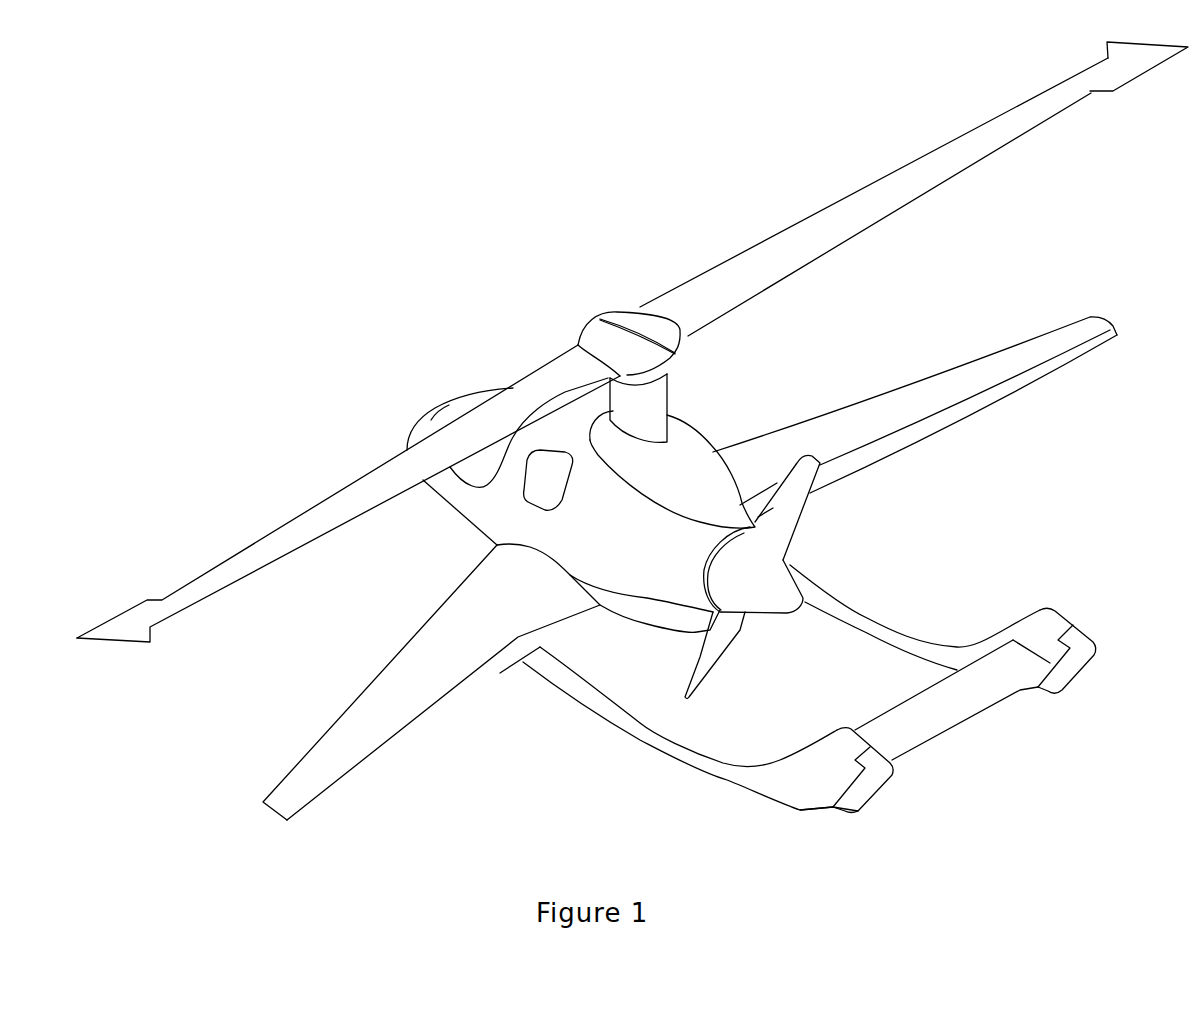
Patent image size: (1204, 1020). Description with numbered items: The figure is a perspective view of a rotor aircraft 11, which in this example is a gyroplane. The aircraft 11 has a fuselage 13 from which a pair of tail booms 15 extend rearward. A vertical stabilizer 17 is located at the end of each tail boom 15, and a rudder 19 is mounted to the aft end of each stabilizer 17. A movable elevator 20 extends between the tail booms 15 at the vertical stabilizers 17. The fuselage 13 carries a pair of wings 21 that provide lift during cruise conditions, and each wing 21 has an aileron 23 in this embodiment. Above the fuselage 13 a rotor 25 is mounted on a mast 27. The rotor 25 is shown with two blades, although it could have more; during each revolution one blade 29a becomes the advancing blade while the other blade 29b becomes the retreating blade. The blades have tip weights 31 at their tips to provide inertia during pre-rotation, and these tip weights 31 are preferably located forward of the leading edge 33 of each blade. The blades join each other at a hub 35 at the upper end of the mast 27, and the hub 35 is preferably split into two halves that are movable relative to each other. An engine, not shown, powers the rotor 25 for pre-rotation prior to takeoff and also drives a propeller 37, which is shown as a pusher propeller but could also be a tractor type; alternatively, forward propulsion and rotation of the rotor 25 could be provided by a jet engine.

The aircraft 11 is at (408, 394).
The fuselage 13 is at (472, 523).
The tail boom 15 is at (623, 733).
The vertical stabilizer 17 is at (813, 790).
The rudder 19 is at (877, 795).
The movable elevator 20 is at (947, 723).
The wing 21 is at (372, 733).
The aileron 23 is at (432, 723).
The rotor 25 is at (597, 290).
The mast 27 is at (668, 395).
The advancing blade 29a is at (933, 186).
The retreating blade 29b is at (300, 512).
The tip weight 31 is at (1107, 42).
The leading edge 33 is at (973, 130).
The hub 35 is at (630, 310).
The propeller 37 is at (797, 525).